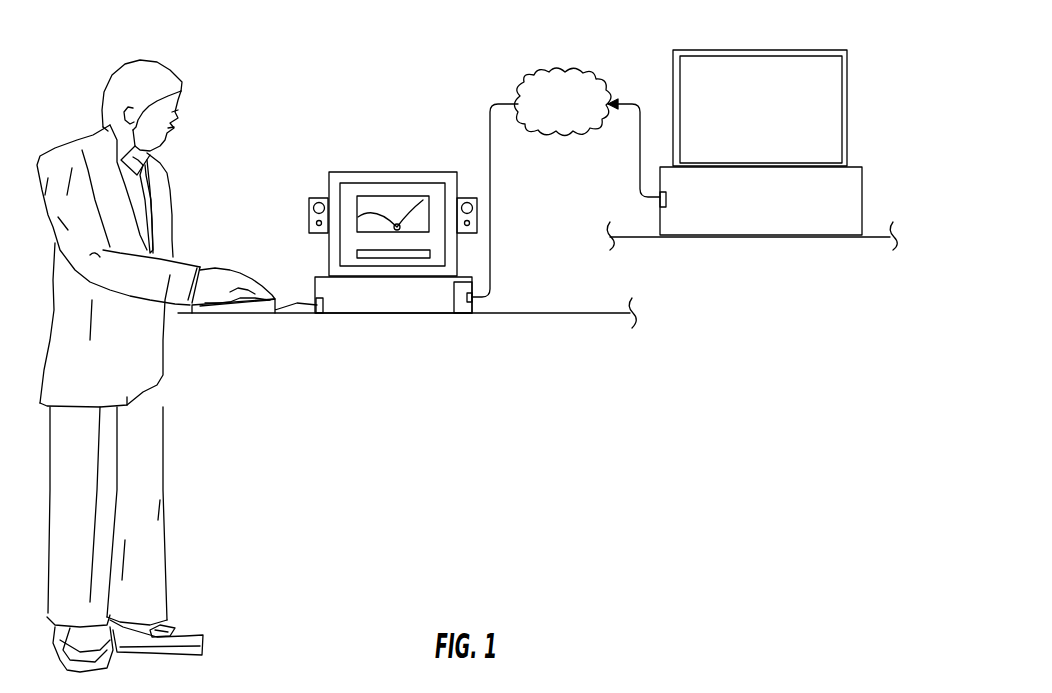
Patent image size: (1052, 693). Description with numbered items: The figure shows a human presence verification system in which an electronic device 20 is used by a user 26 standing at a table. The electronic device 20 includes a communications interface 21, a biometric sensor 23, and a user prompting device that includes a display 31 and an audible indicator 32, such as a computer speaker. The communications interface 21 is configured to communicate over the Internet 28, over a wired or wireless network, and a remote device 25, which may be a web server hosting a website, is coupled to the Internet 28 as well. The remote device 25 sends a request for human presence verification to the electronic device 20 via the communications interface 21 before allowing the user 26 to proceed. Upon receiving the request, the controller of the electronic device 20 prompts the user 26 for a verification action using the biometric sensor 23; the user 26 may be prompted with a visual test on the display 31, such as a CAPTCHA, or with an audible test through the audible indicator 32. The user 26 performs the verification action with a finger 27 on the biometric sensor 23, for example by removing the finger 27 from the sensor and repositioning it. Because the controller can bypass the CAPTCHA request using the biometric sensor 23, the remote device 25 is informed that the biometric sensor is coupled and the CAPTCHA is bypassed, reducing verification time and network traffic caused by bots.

The electronic device 20 is at (322, 107).
The communications interface 21 is at (463, 310).
The biometric sensor 23 is at (263, 293).
The remote device 25 is at (732, 49).
The user 26 is at (50, 245).
The finger 27 is at (217, 268).
The Internet 28 is at (527, 72).
The display 31 is at (360, 192).
The audible indicator 32 is at (464, 195).